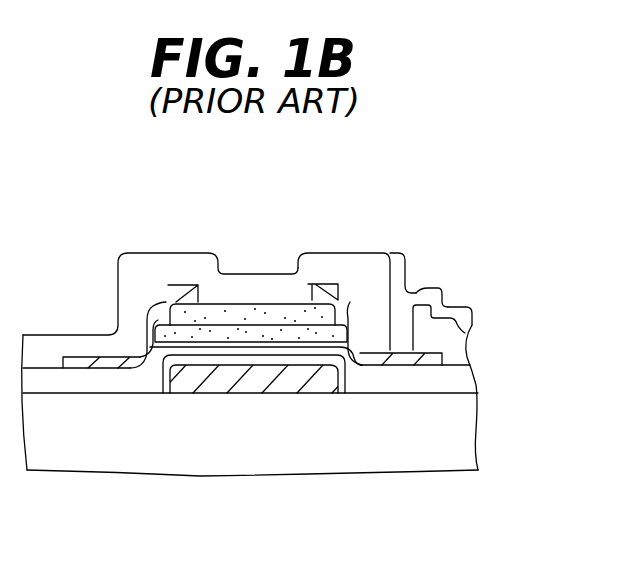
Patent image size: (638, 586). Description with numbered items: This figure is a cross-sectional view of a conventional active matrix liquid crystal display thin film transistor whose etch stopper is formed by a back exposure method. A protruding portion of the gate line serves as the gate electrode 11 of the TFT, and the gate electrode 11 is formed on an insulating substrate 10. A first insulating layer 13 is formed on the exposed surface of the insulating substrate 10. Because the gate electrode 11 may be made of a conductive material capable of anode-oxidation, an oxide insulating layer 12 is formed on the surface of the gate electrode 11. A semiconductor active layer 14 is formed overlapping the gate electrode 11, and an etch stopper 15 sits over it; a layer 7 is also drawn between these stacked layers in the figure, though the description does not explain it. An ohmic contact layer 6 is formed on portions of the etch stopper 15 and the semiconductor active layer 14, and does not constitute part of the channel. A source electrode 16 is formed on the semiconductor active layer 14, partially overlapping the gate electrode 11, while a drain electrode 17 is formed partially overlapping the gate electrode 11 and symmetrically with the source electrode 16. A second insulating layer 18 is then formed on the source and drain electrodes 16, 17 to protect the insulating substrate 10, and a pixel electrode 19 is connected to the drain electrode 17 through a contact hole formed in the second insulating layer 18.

The ohmic contact layer 6 is at (178, 300).
The lower doped layer 7 is at (312, 299).
The insulating substrate 10 is at (468, 435).
The gate electrode 11 is at (248, 383).
The oxide insulating layer 12 is at (163, 378).
The first insulating layer 13 is at (465, 378).
The semiconductor active layer 14 is at (343, 340).
The etch stopper 15 is at (202, 312).
The source electrode 16 is at (160, 302).
The drain electrode 17 is at (318, 284).
The second insulating layer 18 is at (385, 255).
The pixel electrode 19 is at (442, 287).